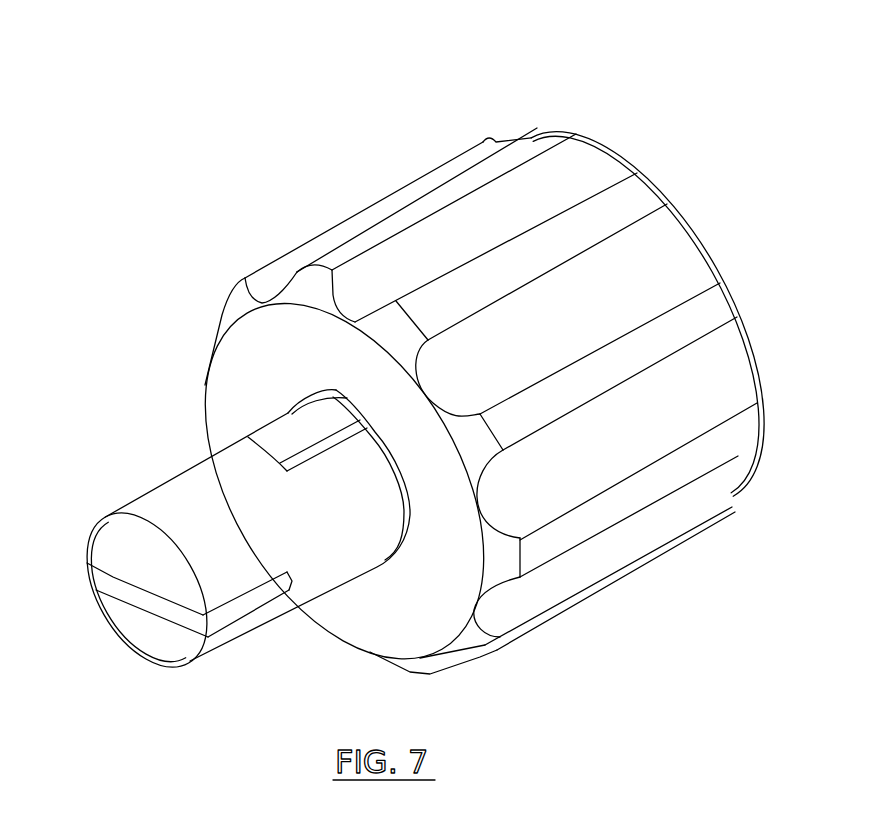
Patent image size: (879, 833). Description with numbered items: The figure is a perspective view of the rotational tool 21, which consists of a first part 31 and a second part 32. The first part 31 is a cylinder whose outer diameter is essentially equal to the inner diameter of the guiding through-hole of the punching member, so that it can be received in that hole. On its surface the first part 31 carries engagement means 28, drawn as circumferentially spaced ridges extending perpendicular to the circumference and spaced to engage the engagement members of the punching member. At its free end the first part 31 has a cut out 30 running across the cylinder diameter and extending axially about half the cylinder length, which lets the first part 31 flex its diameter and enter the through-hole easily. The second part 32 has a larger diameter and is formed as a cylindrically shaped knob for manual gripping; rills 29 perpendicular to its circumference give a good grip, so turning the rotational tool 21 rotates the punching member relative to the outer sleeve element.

The rotational tool 21 is at (394, 364).
The engagement means 28 is at (297, 432).
The rills 29 is at (573, 165).
The cut out 30 is at (113, 578).
The first part 31 is at (217, 470).
The second part 32 is at (657, 587).